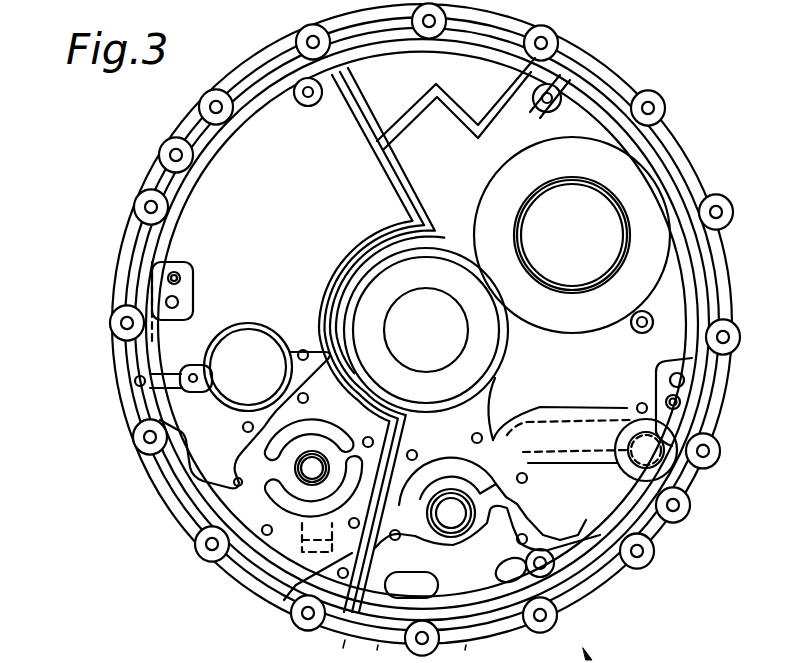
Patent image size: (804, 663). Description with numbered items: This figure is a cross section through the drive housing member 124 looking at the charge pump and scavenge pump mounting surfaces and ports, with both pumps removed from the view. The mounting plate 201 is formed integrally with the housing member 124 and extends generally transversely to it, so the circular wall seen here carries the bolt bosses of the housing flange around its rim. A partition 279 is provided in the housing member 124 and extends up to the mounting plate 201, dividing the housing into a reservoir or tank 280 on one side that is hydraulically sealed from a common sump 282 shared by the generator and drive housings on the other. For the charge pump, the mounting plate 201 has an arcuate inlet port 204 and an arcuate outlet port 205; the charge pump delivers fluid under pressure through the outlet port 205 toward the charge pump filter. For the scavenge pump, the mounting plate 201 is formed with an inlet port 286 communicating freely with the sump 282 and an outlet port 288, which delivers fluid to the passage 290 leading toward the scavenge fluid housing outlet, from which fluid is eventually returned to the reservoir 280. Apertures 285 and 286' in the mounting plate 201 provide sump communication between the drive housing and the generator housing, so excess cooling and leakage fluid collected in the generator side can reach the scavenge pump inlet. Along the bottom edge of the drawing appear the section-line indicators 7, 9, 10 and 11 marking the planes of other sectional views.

The housing member 124 is at (150, 266).
The reservoir 280 is at (270, 258).
The partition 279 is at (360, 258).
The arcuate outlet port 205 is at (313, 423).
The mounting plate 201 is at (233, 503).
The arcuate inlet port 204 is at (296, 540).
The outlet port 288 is at (448, 462).
The passage 290 is at (605, 433).
The inlet port 286 is at (543, 517).
The aperture 285 is at (556, 564).
The common sump 282 is at (515, 578).
The aperture 286' is at (466, 617).
The section line 11 is at (346, 651).
The section line 9 is at (376, 654).
The section line 10 is at (465, 654).
The section line 7 is at (598, 655).